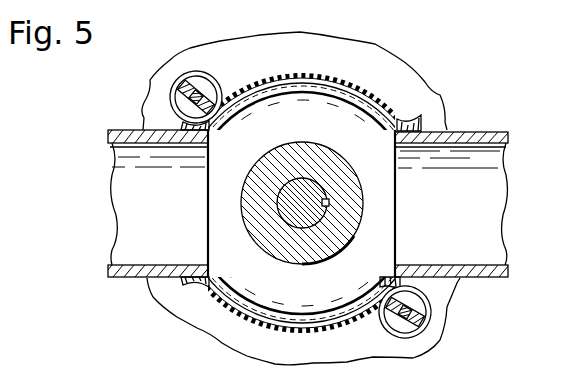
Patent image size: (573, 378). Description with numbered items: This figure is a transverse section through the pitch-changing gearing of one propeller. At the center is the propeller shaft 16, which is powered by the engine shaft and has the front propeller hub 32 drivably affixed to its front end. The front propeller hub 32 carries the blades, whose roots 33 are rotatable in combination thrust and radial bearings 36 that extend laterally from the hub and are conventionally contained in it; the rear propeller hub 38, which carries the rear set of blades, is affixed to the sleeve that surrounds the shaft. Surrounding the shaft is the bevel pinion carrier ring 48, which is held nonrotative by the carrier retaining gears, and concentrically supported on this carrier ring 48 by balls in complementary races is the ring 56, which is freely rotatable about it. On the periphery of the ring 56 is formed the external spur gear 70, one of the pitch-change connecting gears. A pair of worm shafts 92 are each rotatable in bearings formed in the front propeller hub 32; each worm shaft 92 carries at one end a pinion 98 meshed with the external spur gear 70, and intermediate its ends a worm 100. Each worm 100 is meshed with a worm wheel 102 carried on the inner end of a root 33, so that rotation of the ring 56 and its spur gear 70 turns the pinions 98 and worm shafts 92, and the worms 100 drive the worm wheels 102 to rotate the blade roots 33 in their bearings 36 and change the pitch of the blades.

The propeller shaft 16 is at (329, 205).
The front propeller hub 32 is at (323, 152).
The roots 33 is at (150, 265).
The combination thrust and radial bearings 36 is at (420, 127).
The rear propeller hub 38 is at (412, 67).
The bevel pinion carrier ring 48 is at (256, 312).
The ring 56 is at (327, 322).
The external spur gear 70 is at (336, 81).
The worm shafts 92 is at (316, 207).
The pinion 98 is at (206, 76).
The worm 100 is at (313, 207).
The worm wheel 102 is at (423, 98).